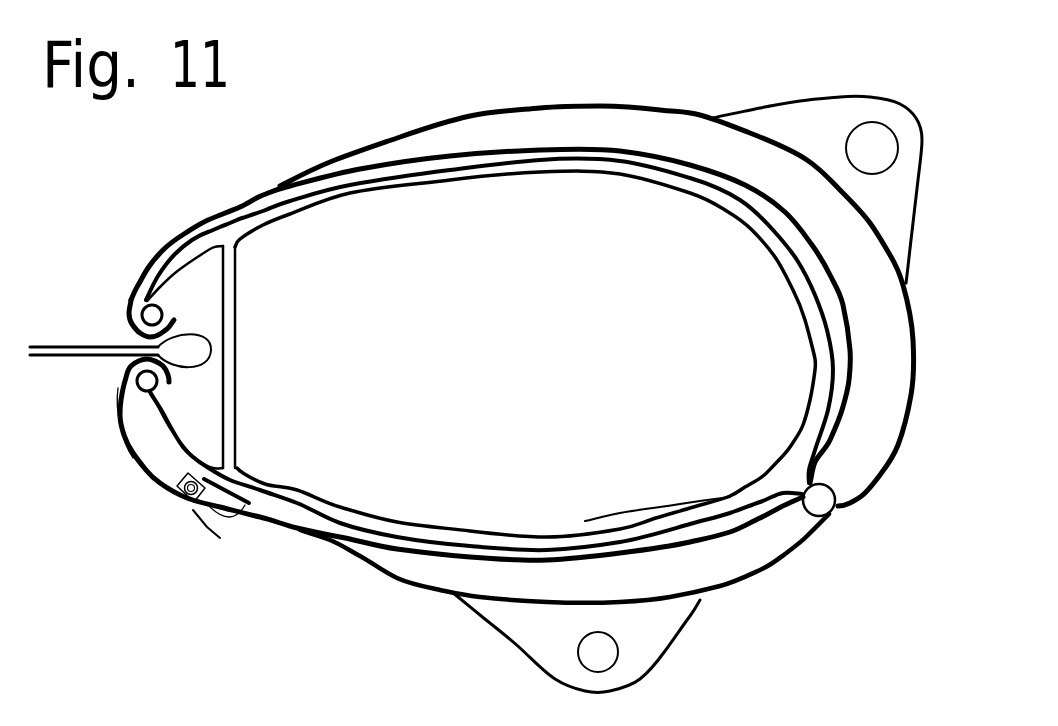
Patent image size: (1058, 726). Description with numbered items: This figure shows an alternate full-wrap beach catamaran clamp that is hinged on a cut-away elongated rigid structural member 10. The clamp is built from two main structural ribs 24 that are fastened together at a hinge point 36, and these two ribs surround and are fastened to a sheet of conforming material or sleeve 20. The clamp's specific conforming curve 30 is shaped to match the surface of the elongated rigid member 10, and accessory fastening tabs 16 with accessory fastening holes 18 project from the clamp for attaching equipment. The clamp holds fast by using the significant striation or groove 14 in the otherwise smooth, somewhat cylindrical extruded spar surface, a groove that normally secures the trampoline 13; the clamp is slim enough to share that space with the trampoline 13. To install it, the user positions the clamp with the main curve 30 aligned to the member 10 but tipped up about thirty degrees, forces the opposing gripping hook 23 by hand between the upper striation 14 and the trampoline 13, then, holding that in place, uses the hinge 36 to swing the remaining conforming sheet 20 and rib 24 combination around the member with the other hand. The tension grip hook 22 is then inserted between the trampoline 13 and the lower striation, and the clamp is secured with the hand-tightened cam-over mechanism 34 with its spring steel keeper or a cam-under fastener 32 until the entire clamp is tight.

The beach catamaran rigid elongated structural member 10 is at (659, 534).
The beach catamaran trampoline 13 is at (78, 356).
The significant striation—groove 14 is at (140, 317).
The accessory fastening tabs 16 is at (832, 125).
The accessory fastening holes 18 is at (878, 145).
The conforming sheet or sleeve 20 is at (240, 208).
The tension grip hook 22 is at (132, 368).
The gripping hook 23 is at (129, 307).
The main structural rib 24 is at (872, 412).
The specific conforming curve 30 is at (660, 154).
The hand tighten cam-under 32 is at (217, 507).
The hand tighten cam-over 34 is at (132, 457).
The hinge point of two-piece solid clamp 36 is at (820, 507).